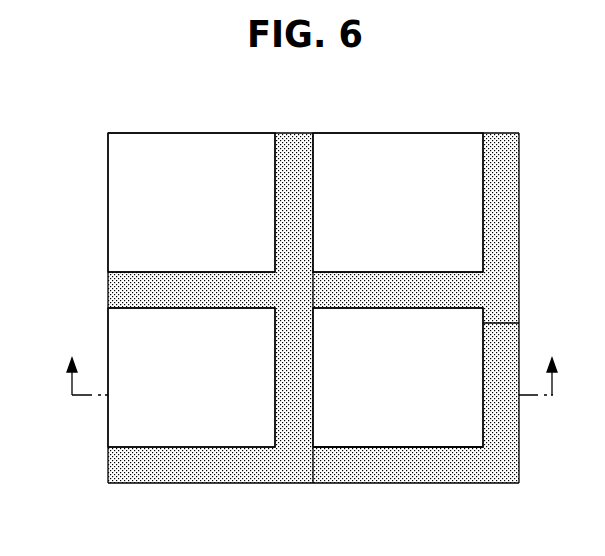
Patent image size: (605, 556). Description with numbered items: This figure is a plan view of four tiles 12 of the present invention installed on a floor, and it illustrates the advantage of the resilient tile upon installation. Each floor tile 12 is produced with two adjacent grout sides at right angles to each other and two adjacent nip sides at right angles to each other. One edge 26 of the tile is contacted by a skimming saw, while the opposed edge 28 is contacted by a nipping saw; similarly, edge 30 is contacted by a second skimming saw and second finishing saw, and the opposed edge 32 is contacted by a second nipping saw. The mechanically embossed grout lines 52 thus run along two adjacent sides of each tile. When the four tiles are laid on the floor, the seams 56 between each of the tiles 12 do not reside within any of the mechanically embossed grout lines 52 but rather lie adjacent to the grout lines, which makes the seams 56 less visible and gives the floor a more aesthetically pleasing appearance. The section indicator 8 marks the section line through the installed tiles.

The floor tile 12 is at (206, 208).
The edge 26 is at (519, 160).
The edge 28 is at (108, 190).
The edge 30 is at (200, 484).
The opposed edge 32 is at (188, 133).
The grout lines 52 is at (283, 250).
The seams 56 is at (315, 200).
The section line 8- 8 is at (312, 366).